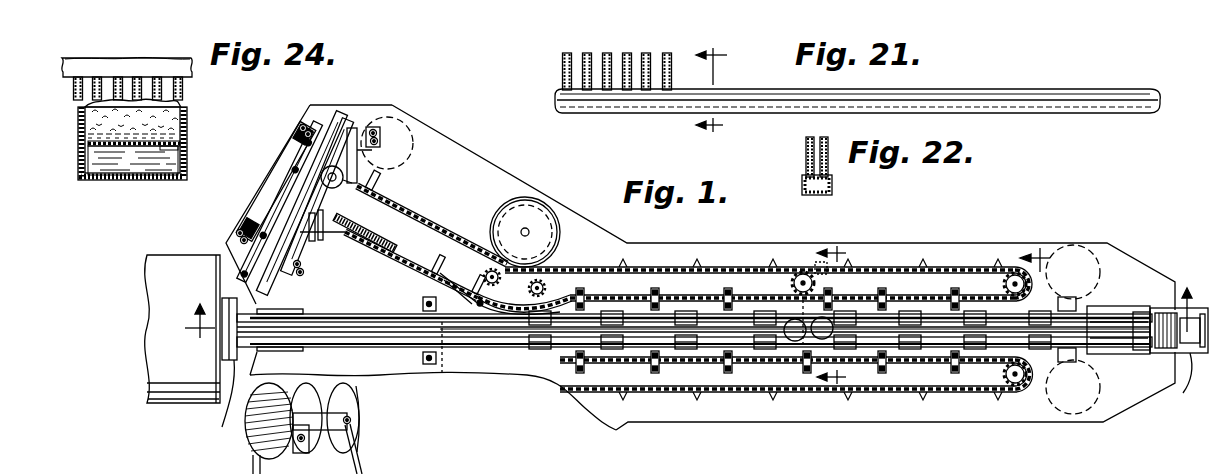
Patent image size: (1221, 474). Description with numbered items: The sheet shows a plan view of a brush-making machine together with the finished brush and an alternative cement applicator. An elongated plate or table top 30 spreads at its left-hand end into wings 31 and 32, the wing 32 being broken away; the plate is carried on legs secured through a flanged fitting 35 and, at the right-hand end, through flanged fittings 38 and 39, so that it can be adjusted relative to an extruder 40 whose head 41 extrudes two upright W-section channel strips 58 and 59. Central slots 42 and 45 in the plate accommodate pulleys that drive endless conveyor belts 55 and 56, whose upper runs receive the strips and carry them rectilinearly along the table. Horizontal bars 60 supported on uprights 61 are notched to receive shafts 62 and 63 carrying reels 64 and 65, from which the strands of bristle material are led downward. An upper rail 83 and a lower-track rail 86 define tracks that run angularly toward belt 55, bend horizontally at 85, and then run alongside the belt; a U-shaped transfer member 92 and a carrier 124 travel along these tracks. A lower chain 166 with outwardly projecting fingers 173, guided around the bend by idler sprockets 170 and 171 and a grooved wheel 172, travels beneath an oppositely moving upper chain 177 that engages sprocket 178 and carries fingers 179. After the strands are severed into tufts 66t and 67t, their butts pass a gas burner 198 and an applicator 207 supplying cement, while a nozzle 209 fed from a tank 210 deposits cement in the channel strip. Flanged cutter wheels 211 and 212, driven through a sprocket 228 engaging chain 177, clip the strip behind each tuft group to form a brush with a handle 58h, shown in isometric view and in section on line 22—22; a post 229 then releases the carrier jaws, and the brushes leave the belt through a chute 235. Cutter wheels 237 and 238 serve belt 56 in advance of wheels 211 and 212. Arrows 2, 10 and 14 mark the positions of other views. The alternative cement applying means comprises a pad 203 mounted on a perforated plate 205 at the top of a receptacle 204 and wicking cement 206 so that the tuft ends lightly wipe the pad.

In FIG. 1, the section line 2- 2 is at (680, 302).
In FIG. 1, the section line 10- 10 is at (840, 305).
In FIG. 1, the section line 14- 14 is at (1050, 364).
In FIG. 21, the section line 22— 22 is at (711, 92).
In FIG. 1, the elongated plate or table top 30 is at (490, 162).
In FIG. 1, the wing 31 is at (443, 143).
In FIG. 1, the wing 32 is at (612, 434).
In FIG. 1, the flanged fitting 35 is at (410, 124).
In FIG. 1, the flanged fitting 38 is at (1092, 258).
In FIG. 1, the flanged fitting 39 is at (1086, 410).
In FIG. 1, the extruder 40 is at (172, 254).
In FIG. 1, the extruder head 41 is at (212, 405).
In FIG. 1, the central slot 42 is at (298, 313).
In FIG. 1, the central slot 45 is at (1105, 306).
In FIG. 1, the endless conveyor belt 55 is at (350, 326).
In FIG. 1, the endless conveyor belt 56 is at (388, 349).
In FIG. 1, the channel strip 58 is at (330, 313).
In FIG. 21, the brush handle 58h is at (1035, 108).
In FIG. 22, the brush handle 58h is at (833, 183).
In FIG. 1, the channel strip 59 is at (226, 367).
In FIG. 1, the horizontal bar 60 is at (332, 415).
In FIG. 1, the upright 61 is at (300, 130).
In FIG. 1, the shaft 62 is at (355, 422).
In FIG. 1, the shaft 63 is at (305, 418).
In FIG. 1, the reel 64 is at (356, 390).
In FIG. 1, the reel 65 is at (300, 392).
In FIG. 21, the tuft 66t is at (606, 52).
In FIG. 22, the tuft 66t is at (825, 138).
In FIG. 21, the tuft 67t is at (668, 58).
In FIG. 22, the tuft 67t is at (806, 150).
In FIG. 1, the upper rail 83 is at (320, 241).
In FIG. 1, the track bend 85 is at (514, 318).
In FIG. 1, the rail 86 is at (592, 294).
In FIG. 1, the U-shaped transfer member 92 is at (320, 179).
In FIG. 24, the carrier 124 is at (108, 50).
In FIG. 1, the chain 166 is at (713, 294).
In FIG. 1, the idler sprocket 170 is at (490, 272).
In FIG. 1, the idler sprocket 171 is at (546, 285).
In FIG. 1, the grooved wheel 172 is at (492, 205).
In FIG. 1, the finger 173 is at (628, 266).
In FIG. 1, the chain 177 is at (882, 267).
In FIG. 1, the sprocket 178 is at (380, 190).
In FIG. 1, the finger 179 is at (918, 268).
In FIG. 1, the gas burner 198 is at (382, 250).
In FIG. 24, the pad 203 is at (160, 107).
In FIG. 24, the receptacle 204 is at (187, 127).
In FIG. 24, the perforated plate 205 is at (182, 148).
In FIG. 24, the cement 206 is at (132, 172).
In FIG. 1, the applicator 207 is at (482, 307).
In FIG. 1, the supply nozzle 209 is at (455, 312).
In FIG. 1, the tank 210 is at (428, 366).
In FIG. 1, the flanged cutter wheel 211 is at (815, 283).
In FIG. 1, the flanged cutter wheel 212 is at (822, 340).
In FIG. 1, the sprocket 228 is at (822, 262).
In FIG. 1, the post 229 is at (866, 330).
In FIG. 1, the chute 235 is at (1183, 393).
In FIG. 1, the cutter wheel 237 is at (790, 340).
In FIG. 1, the cutter wheel 238 is at (818, 340).